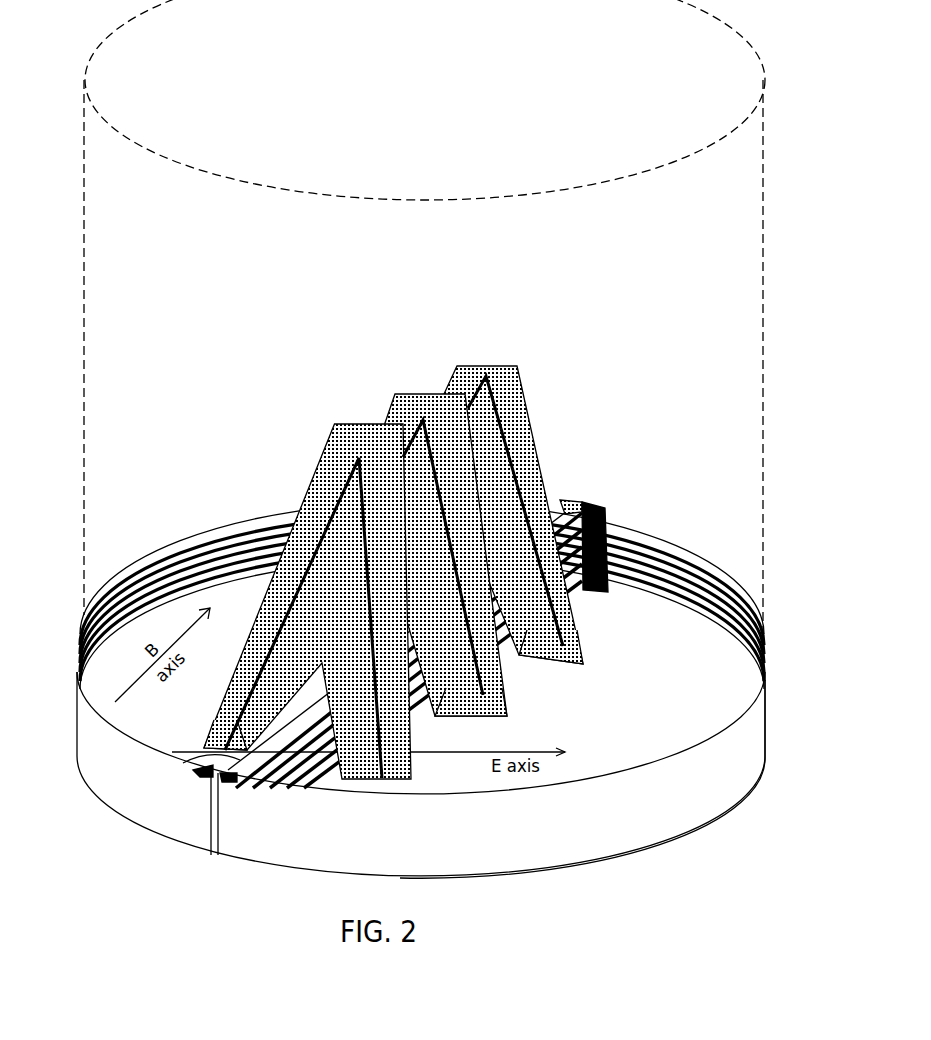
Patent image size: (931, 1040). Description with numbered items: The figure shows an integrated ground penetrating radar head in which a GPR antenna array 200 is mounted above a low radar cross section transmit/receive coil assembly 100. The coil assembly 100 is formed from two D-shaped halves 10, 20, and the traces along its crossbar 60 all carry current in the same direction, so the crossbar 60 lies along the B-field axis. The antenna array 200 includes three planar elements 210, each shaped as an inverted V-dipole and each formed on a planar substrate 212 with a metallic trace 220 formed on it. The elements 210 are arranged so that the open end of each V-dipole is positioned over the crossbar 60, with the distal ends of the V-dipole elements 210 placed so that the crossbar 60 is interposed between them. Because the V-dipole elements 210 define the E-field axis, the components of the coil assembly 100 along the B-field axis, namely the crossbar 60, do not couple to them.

The D-shaped half 10 is at (97, 742).
The D-shaped half 20 is at (738, 750).
The crossbar 60 is at (187, 762).
The transmit/receive coil assembly 100 is at (658, 530).
The GPR antenna array 200 is at (403, 565).
The element 210 is at (350, 446).
The planar substrate 212 is at (240, 702).
The metallic trace 220 is at (382, 725).